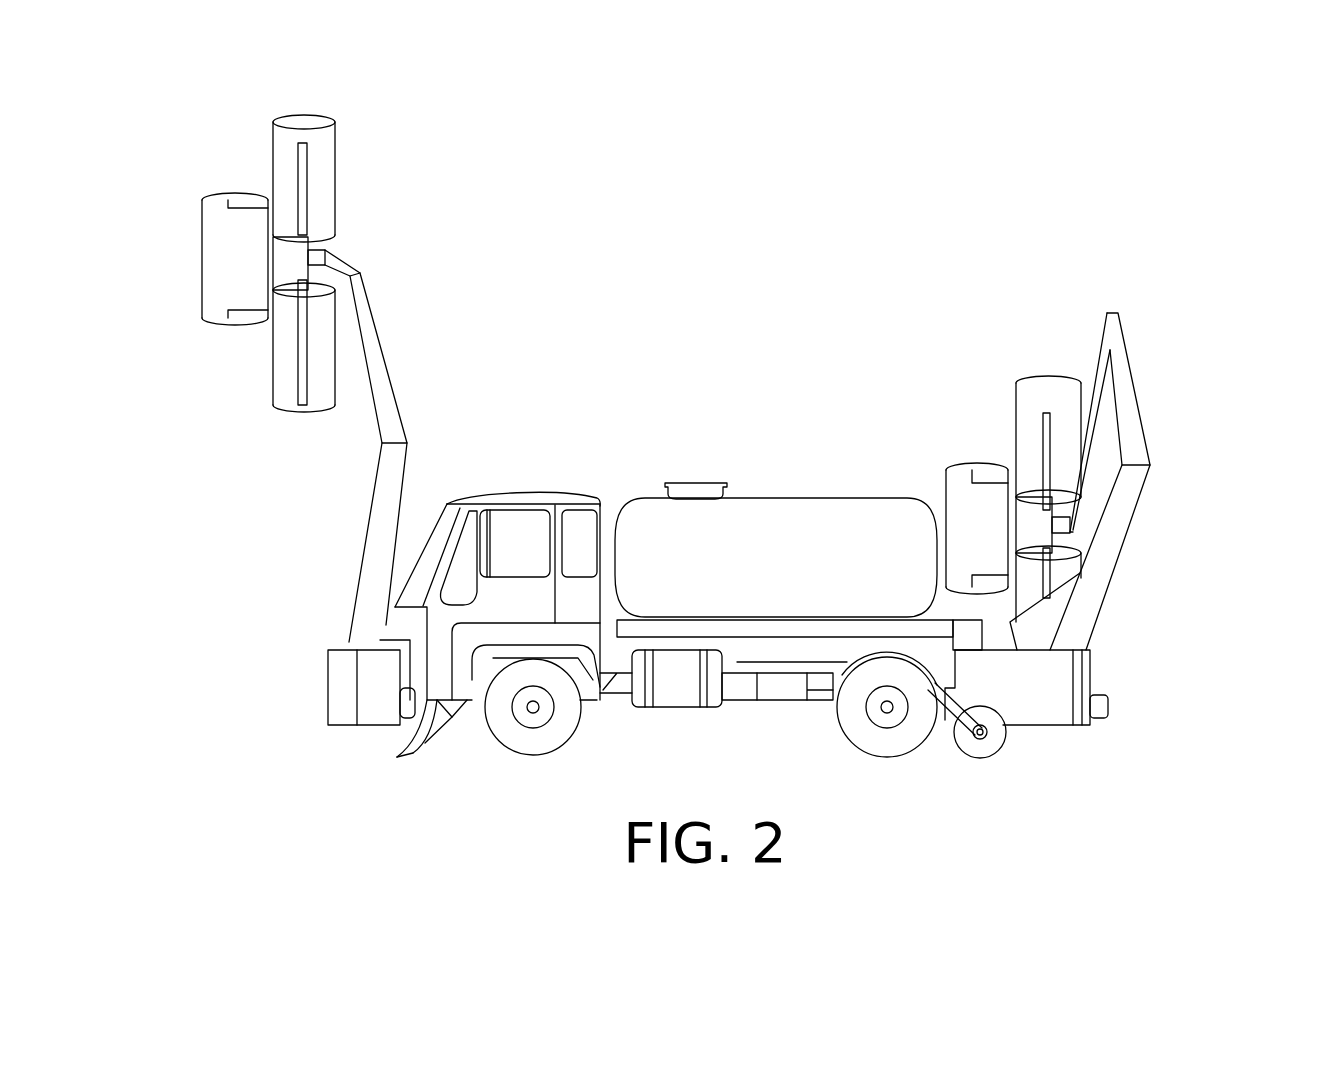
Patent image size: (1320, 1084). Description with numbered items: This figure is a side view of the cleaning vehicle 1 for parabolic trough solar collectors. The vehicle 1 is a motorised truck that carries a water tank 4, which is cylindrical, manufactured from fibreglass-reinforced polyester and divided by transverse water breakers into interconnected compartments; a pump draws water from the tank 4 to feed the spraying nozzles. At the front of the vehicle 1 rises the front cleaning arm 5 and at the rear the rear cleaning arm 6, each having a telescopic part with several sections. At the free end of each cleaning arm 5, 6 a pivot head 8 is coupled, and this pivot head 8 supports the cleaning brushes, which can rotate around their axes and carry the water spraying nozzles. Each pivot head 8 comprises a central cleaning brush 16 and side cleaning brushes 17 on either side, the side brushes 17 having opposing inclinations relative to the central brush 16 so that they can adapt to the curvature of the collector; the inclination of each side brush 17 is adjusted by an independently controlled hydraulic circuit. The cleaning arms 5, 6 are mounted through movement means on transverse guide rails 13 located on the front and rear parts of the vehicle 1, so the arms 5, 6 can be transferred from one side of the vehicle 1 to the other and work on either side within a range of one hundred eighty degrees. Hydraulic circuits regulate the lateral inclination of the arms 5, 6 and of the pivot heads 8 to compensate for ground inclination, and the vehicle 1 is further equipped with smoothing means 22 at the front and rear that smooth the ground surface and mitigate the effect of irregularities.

The cleaning vehicle 1 is at (474, 795).
The water tank 4 is at (782, 528).
The front cleaning arm 5 is at (418, 403).
The rear cleaning arm 6 is at (1180, 436).
The pivot head 8 is at (343, 243).
The transverse guide rails 13 is at (338, 676).
The central cleaning brush 16 is at (213, 257).
The side cleaning brush 17 is at (322, 175).
The smoothing means 22 is at (410, 740).